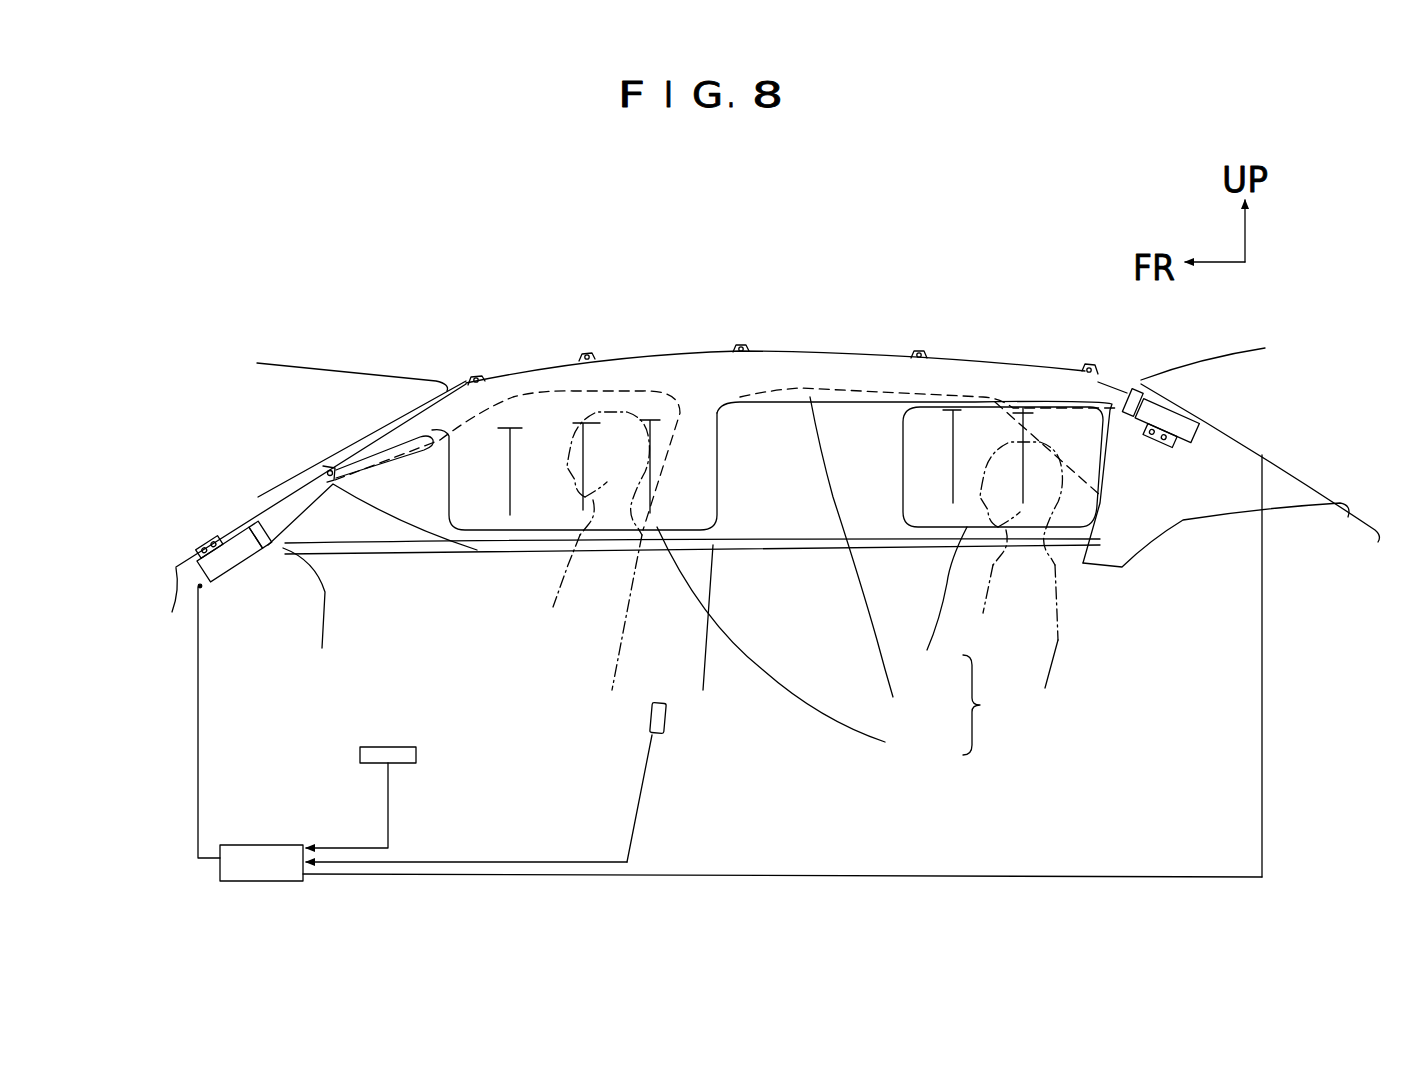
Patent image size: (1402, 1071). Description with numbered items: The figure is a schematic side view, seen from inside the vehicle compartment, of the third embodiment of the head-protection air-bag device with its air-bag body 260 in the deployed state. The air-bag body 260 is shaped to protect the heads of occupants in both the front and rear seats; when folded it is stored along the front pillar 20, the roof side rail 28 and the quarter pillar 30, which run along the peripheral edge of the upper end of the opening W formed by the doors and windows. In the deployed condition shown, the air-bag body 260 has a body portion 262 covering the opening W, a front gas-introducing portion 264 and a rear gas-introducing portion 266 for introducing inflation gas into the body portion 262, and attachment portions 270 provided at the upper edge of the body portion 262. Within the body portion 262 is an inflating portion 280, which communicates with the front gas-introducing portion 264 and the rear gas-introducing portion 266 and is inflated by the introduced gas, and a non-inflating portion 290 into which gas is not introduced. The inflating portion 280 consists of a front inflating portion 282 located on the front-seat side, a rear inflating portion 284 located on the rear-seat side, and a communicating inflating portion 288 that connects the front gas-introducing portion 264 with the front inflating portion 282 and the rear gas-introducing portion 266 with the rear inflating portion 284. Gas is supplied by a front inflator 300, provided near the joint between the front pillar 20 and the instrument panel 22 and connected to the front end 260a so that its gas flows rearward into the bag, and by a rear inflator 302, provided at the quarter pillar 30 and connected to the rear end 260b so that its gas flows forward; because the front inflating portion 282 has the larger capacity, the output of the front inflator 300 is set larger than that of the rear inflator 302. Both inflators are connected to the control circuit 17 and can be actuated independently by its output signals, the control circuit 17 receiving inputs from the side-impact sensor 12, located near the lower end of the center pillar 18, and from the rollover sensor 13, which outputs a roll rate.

The side-impact sensor 12 is at (665, 725).
The rollover sensor 13 is at (392, 747).
The control circuit 17 is at (250, 883).
The center pillar 18 is at (724, 510).
The front pillar 20 is at (372, 432).
The instrument panel 22 is at (328, 602).
The roof side rail 28 is at (815, 355).
The quarter pillar 30 is at (1203, 438).
The air-bag body 260 is at (678, 353).
The front end of the air-bag body 260a is at (263, 508).
The rear end of the air-bag body 260b is at (1140, 389).
The body portion 262 is at (870, 543).
The front gas-introducing portion 264 is at (390, 425).
The rear gas-introducing portion 266 is at (1047, 368).
The attachment portions 270 is at (478, 375).
The inflating portion 280 is at (1010, 660).
The front inflating portion 282 is at (805, 646).
The rear inflating portion 284 is at (933, 610).
The communicating inflating portion 288 is at (882, 563).
The non-inflating portion 290 is at (417, 515).
The front inflator 300 is at (226, 587).
The rear inflator 302 is at (1175, 452).
The opening W is at (830, 541).